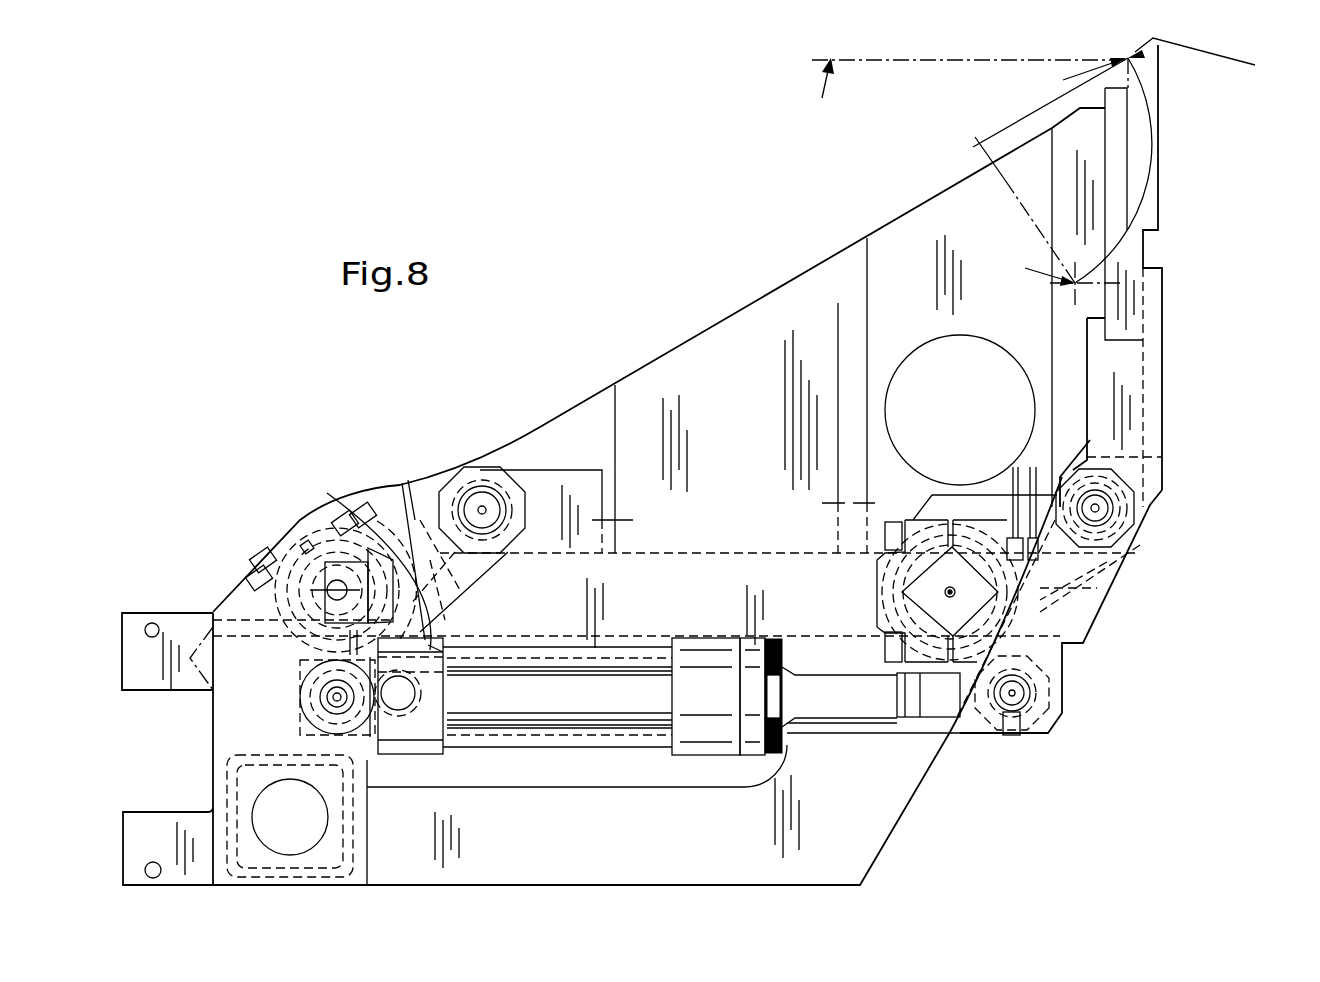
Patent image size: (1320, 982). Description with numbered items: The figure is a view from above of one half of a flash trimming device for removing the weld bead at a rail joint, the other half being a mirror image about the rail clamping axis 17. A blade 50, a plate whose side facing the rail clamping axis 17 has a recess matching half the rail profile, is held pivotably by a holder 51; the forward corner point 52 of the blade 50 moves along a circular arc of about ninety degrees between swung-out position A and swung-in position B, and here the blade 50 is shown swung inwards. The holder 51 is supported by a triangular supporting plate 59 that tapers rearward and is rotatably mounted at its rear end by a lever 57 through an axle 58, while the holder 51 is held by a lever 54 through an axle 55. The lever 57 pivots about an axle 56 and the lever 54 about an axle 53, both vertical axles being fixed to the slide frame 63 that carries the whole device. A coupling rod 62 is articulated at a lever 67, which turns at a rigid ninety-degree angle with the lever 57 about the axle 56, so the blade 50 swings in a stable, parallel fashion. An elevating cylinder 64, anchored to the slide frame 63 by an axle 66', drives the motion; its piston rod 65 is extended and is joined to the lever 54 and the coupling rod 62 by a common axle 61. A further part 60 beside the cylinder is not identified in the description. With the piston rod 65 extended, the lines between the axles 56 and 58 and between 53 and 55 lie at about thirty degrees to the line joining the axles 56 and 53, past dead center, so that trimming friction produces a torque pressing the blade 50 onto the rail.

The rail clamping axis 17 is at (966, 98).
The blade 50 is at (1162, 78).
The holder 51 is at (1130, 254).
The forward corner point 52 is at (1207, 60).
The axle 53 is at (957, 594).
The lever 54 is at (1120, 582).
The axle 55 is at (1100, 507).
The axle 56 is at (323, 588).
The lever 57 is at (393, 483).
The axle 58 is at (482, 508).
The supporting plate 59 is at (578, 404).
The bearing block 60 is at (394, 700).
The axle 61 is at (1018, 697).
The coupling rod 62 is at (555, 737).
The slide frame 63 is at (863, 842).
The elevating cylinder 64 is at (657, 712).
The piston rod 65 is at (865, 710).
The axle 66' is at (267, 691).
The lever 67 is at (428, 645).